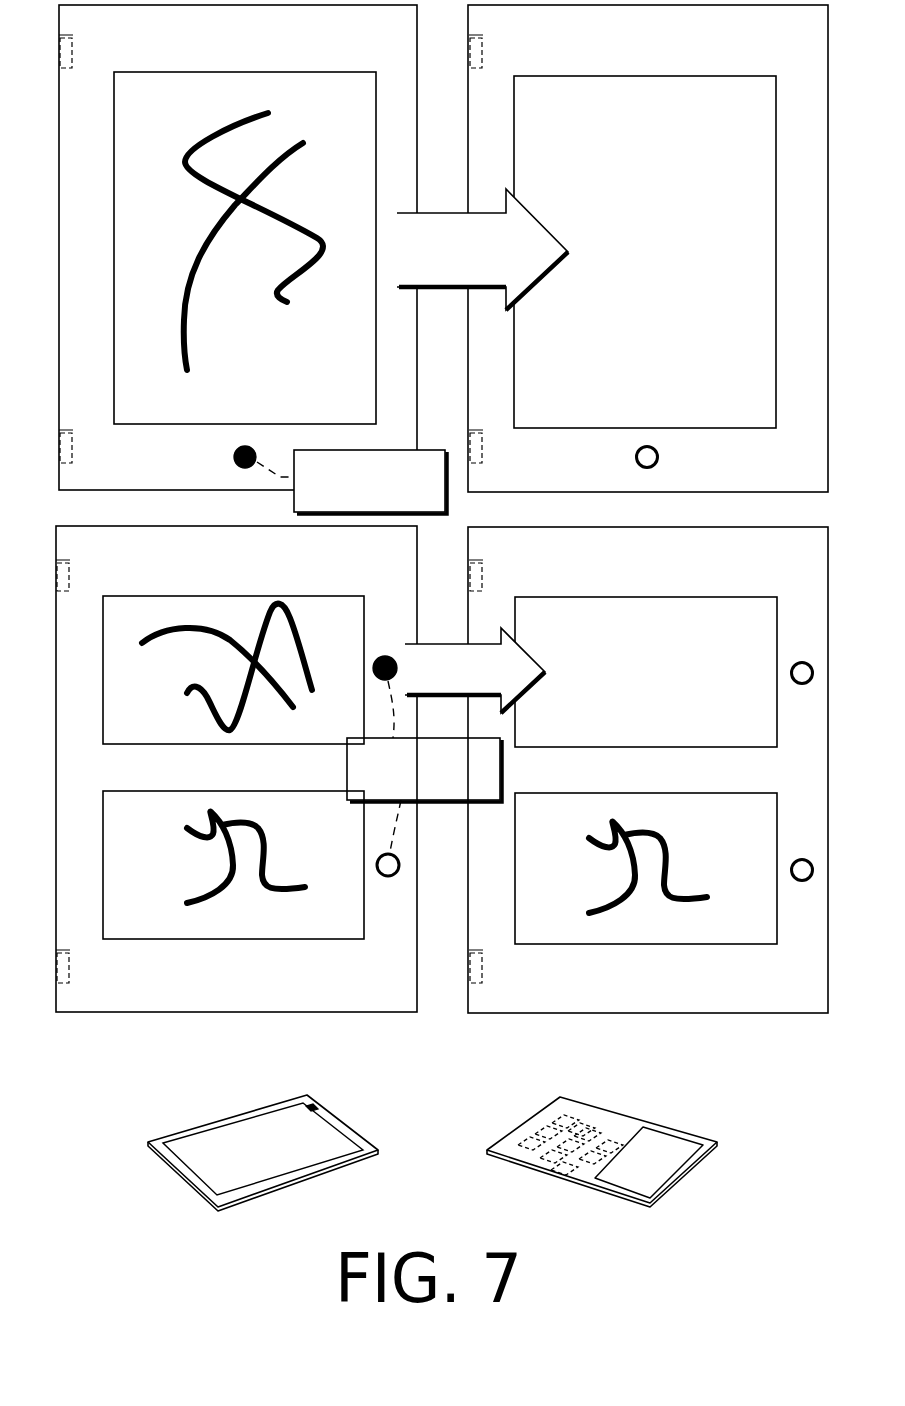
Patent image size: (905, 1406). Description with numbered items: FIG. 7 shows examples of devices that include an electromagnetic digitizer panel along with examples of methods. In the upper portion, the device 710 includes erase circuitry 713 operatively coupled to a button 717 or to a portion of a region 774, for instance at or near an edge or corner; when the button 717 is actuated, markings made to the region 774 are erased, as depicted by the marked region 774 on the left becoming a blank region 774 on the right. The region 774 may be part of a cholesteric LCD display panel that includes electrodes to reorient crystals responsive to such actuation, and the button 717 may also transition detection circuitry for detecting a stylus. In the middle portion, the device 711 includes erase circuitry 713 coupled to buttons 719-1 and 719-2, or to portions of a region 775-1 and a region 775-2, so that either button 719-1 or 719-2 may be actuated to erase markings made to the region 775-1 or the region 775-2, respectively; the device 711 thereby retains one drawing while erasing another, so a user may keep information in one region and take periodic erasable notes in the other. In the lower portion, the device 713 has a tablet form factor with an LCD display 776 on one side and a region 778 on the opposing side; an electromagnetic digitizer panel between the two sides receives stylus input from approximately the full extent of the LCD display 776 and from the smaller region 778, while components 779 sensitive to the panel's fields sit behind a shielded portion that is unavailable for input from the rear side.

The device 710 is at (233, 48).
The region 774 is at (350, 405).
The button 717 is at (234, 458).
The erase circuitry 713 is at (435, 506).
The device 711 is at (255, 574).
The region 775-1 is at (192, 727).
The button 719-1 is at (377, 681).
The region 775-2 is at (185, 929).
The button 719-2 is at (382, 875).
The LCD display 776 is at (233, 1132).
The components 779 is at (587, 1108).
The region 778 is at (670, 1153).